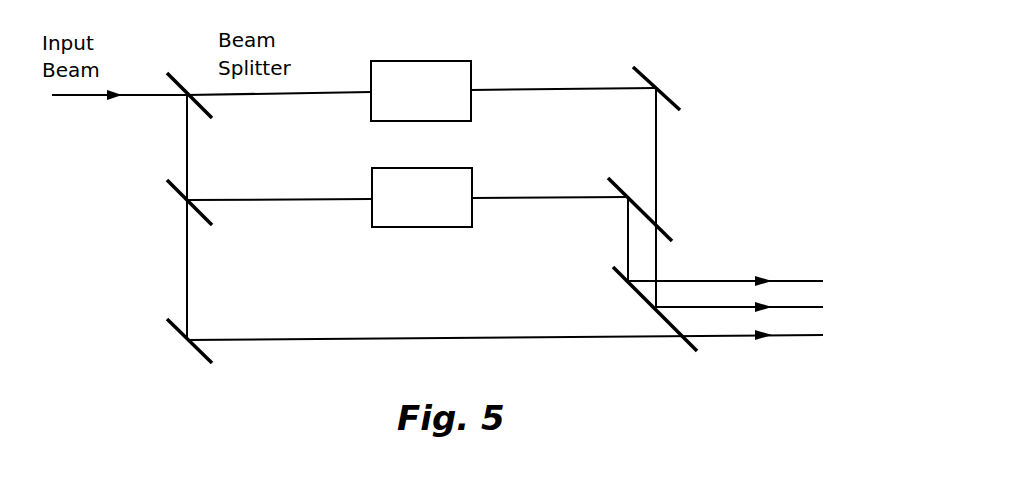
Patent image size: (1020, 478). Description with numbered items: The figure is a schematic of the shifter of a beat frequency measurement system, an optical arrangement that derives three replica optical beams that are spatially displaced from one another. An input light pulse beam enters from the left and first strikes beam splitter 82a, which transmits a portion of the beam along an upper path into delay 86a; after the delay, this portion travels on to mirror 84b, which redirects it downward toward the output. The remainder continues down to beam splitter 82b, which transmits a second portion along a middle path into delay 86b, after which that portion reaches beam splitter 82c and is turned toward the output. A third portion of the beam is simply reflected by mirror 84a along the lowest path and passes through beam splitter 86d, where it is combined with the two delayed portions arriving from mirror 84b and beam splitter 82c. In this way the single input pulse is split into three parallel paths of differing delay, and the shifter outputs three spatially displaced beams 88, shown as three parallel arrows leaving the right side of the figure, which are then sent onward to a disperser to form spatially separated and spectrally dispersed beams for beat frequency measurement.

The beam splitter 82a is at (174, 90).
The beam splitter 82b is at (182, 202).
The beam splitter 82c is at (667, 225).
The mirror 84a is at (190, 345).
The mirror 84b is at (650, 75).
The delay 86a is at (421, 91).
The delay 86b is at (422, 197).
The beam splitter 86d is at (682, 343).
The spatially displaced beams 88 is at (798, 337).